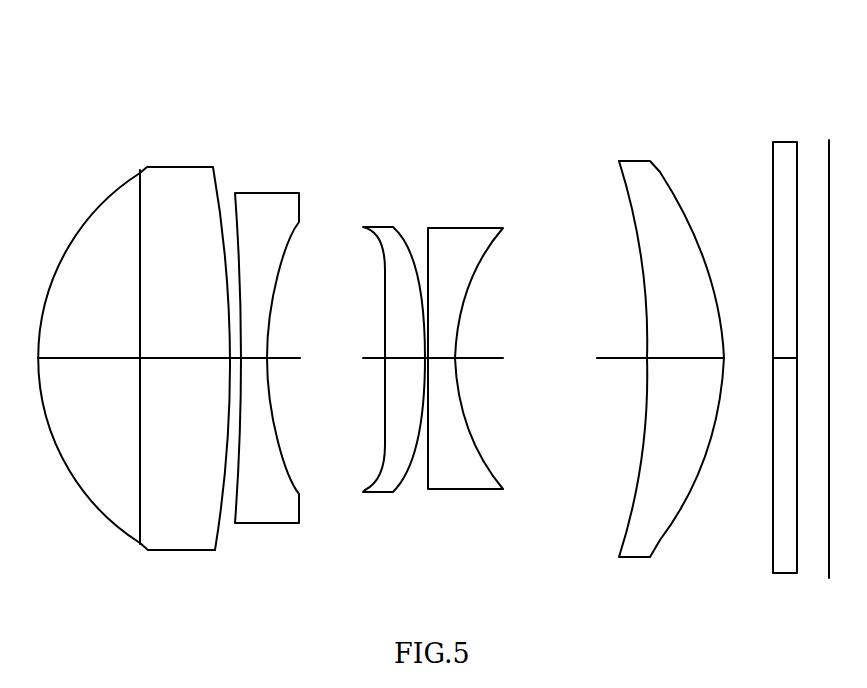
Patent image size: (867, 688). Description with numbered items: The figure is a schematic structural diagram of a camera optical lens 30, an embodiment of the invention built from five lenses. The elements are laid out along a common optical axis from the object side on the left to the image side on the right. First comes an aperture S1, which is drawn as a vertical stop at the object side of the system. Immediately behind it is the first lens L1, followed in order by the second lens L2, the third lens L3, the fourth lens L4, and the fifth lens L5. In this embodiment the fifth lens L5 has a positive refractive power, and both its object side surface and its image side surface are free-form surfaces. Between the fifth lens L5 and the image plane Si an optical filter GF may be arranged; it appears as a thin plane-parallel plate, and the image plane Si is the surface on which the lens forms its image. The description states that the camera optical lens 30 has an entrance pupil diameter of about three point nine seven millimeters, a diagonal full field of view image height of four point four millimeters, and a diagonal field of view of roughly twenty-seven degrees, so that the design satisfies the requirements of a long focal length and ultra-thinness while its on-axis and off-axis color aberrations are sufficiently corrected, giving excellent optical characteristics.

The camera optical lens 30 is at (420, 70).
The aperture S1 is at (139, 343).
The first lens L1 is at (134, 344).
The second lens L2 is at (267, 344).
The third lens L3 is at (394, 345).
The fourth lens L4 is at (465, 344).
The fifth lens L5 is at (671, 346).
The optical filter GF is at (784, 346).
The image plane Si is at (828, 345).